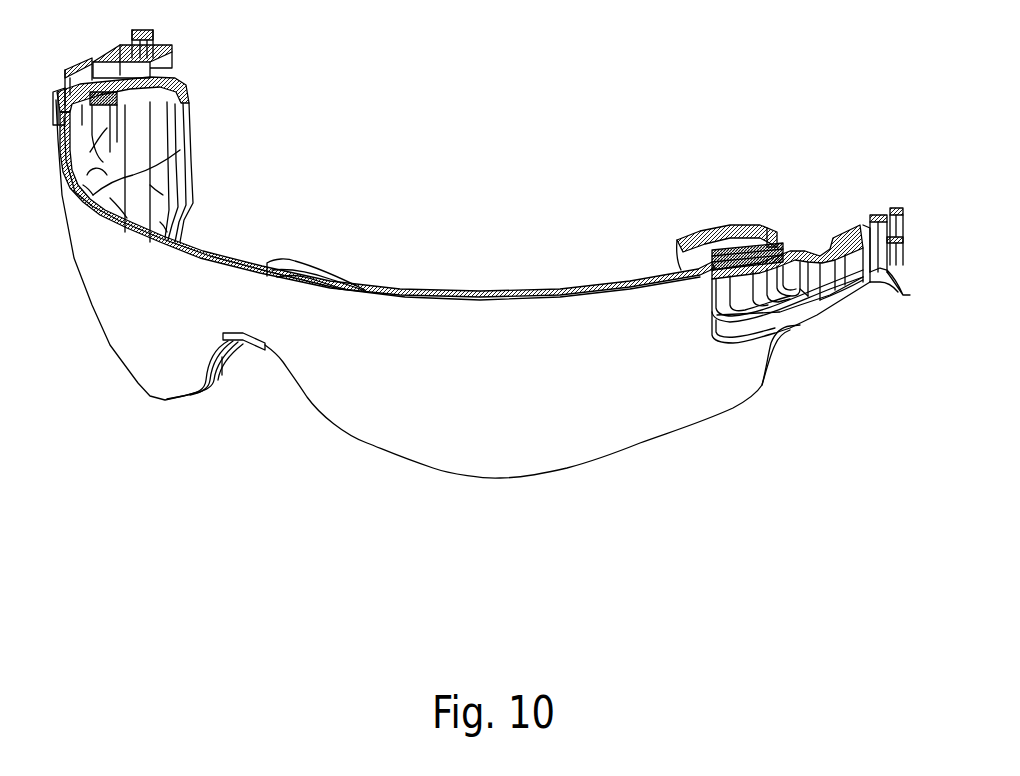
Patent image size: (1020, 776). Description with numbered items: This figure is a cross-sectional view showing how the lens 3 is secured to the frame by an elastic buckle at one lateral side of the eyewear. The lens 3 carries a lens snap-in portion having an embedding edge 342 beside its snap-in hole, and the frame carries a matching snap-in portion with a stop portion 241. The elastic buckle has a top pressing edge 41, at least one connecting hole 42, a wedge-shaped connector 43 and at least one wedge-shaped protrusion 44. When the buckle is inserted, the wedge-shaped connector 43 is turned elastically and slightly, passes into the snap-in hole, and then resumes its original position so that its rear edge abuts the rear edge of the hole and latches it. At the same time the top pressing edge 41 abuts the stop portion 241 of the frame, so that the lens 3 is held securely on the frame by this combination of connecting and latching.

The lens 3 is at (643, 427).
The embedding edge 342 is at (760, 250).
The stop portion 241 is at (780, 255).
The top pressing edge 41 is at (793, 255).
The connecting hole 42 is at (888, 262).
The wedge-shaped connector 43 is at (817, 290).
The wedge-shaped protrusion 44 is at (898, 238).